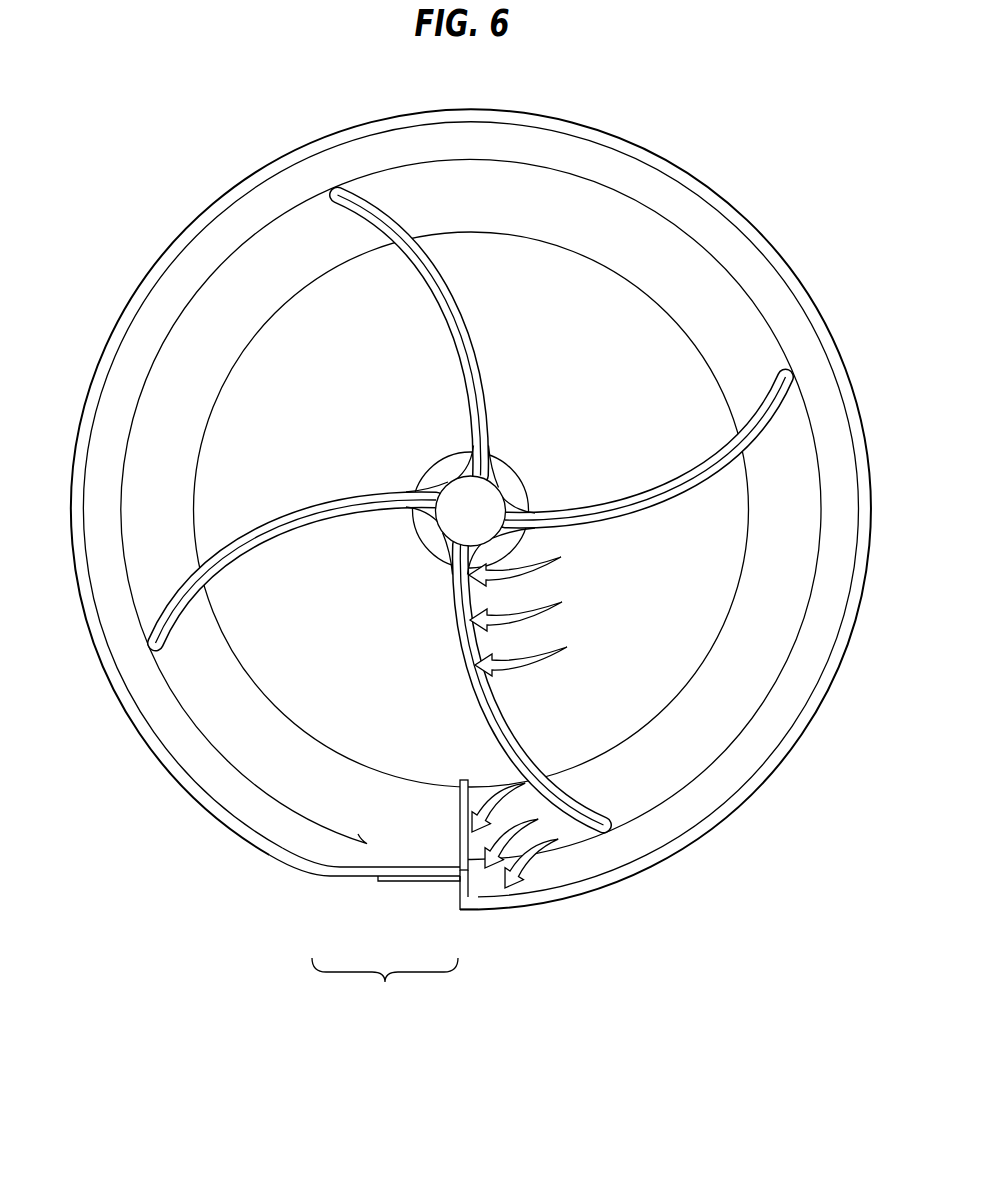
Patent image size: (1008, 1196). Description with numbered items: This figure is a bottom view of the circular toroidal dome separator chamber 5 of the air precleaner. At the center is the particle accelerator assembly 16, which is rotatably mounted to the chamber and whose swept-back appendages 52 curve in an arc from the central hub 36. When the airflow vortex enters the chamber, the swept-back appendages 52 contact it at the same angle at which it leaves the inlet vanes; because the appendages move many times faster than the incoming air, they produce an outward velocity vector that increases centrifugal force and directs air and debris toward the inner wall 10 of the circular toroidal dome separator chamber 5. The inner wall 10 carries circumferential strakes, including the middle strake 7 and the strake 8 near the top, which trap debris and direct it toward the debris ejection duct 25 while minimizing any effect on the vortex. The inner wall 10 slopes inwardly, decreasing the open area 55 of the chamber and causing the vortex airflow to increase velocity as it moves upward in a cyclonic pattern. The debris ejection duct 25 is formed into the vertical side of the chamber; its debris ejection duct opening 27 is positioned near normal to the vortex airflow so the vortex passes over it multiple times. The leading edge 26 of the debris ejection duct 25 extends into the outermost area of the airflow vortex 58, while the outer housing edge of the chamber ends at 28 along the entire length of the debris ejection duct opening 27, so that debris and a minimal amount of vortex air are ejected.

The circular toroidal dome separator chamber 5 is at (810, 729).
The circumferential strake 7 is at (664, 215).
The circumferential strake 8 is at (649, 292).
The inner wall 10 is at (798, 295).
The particle accelerator assembly 16 is at (451, 475).
The central hub 36 is at (492, 504).
The swept-back appendages 52 is at (613, 532).
The open area 55 is at (370, 672).
The outermost area of the airflow vortex 58 is at (456, 809).
The debris ejection duct 25 is at (420, 952).
The leading edge 26 is at (390, 882).
The debris ejection duct opening 27 is at (469, 884).
The outer housing edge 28 is at (456, 905).